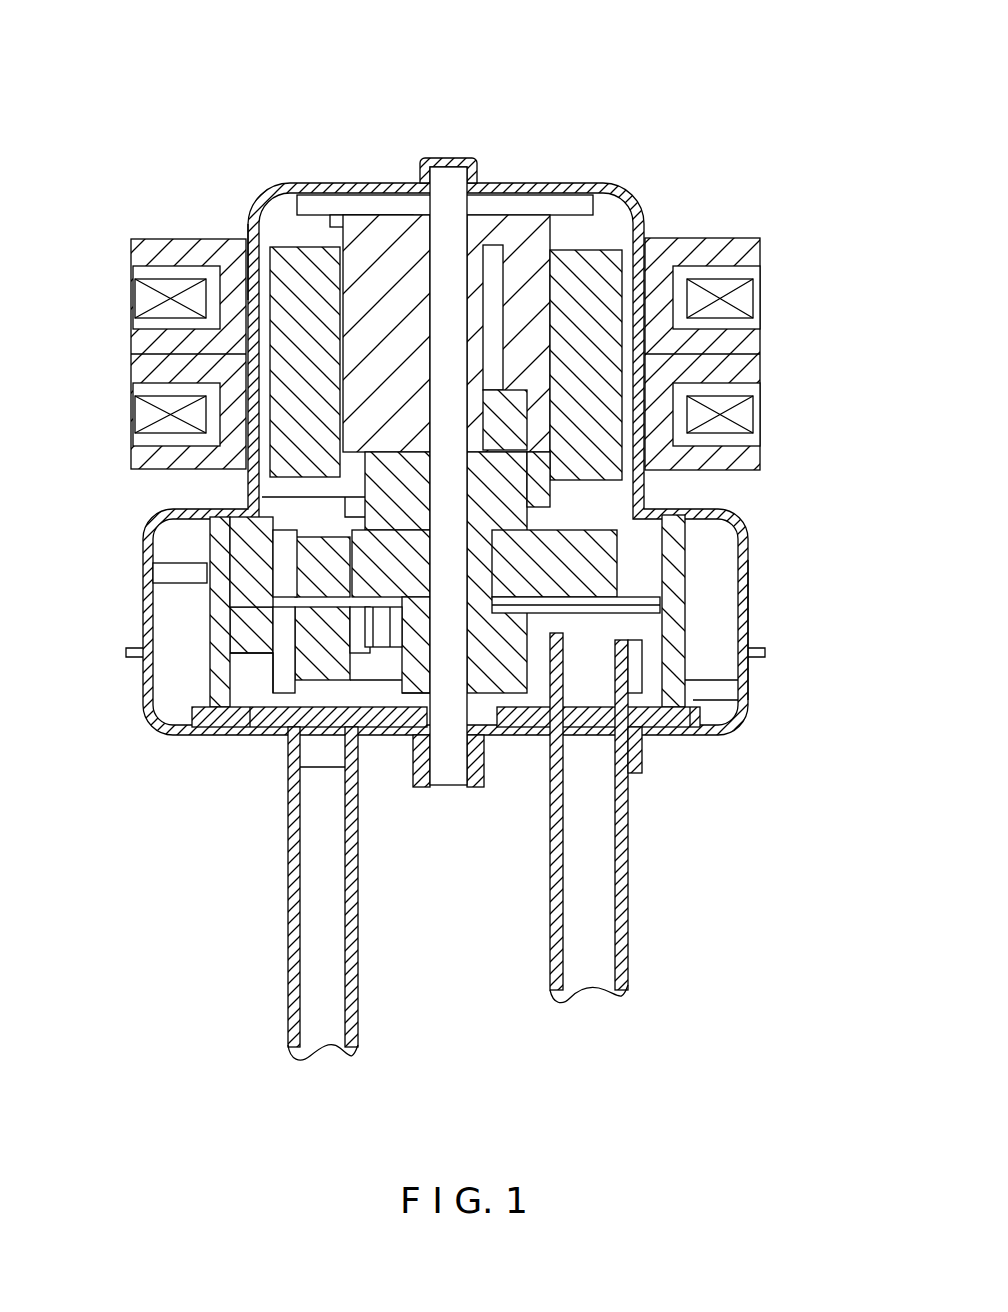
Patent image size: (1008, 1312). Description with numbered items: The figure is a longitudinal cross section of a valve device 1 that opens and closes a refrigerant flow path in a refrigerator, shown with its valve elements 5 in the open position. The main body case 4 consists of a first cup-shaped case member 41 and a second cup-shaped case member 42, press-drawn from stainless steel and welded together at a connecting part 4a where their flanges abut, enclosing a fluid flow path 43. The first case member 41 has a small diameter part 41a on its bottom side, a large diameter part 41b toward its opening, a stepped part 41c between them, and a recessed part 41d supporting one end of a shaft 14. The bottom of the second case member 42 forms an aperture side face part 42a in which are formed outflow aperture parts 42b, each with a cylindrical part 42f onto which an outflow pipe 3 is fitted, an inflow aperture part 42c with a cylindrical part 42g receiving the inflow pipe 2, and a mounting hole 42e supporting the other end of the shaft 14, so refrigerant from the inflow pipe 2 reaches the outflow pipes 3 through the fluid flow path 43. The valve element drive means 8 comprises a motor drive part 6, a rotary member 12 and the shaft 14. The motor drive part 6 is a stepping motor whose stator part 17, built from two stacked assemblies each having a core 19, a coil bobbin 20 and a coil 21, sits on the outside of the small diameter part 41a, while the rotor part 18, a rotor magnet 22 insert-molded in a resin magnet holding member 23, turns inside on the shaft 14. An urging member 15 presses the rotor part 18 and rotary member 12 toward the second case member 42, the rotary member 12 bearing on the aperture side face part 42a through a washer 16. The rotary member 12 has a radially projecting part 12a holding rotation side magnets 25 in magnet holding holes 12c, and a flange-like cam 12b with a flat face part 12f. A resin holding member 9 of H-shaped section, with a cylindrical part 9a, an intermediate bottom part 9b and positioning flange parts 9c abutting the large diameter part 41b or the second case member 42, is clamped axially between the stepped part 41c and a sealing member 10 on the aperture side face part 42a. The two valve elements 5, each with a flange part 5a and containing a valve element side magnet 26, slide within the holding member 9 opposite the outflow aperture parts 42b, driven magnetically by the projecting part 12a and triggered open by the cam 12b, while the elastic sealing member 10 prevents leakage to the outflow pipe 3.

The valve device 1 is at (158, 74).
The inflow pipe 2 is at (705, 840).
The outflow pipe 3 is at (287, 1032).
The main body case 4 is at (473, 630).
The connecting part 4a is at (118, 652).
The valve element 5 is at (252, 655).
The flange part 5a is at (202, 682).
The motor drive part 6 is at (560, 279).
The valve element drive means 8 is at (462, 386).
The holding member 9 is at (690, 555).
The cylindrical part 9a is at (262, 600).
The intermediate bottom part 9b is at (260, 628).
The positioning flange part 9c is at (218, 588).
The sealing member 10 is at (651, 764).
The rotary member 12 is at (510, 390).
The projecting part 12a is at (590, 548).
The cam 12b is at (400, 745).
The magnet holding hole 12c is at (310, 568).
The flat face part 12f is at (368, 745).
The shaft 14 is at (525, 212).
The urging member 15 is at (296, 228).
The washer 16 is at (433, 780).
The stator part 17 is at (712, 226).
The rotor part 18 is at (610, 220).
The core 19 is at (500, 333).
The coil bobbin 20 is at (501, 340).
The coil 21 is at (745, 297).
The rotor magnet 22 is at (256, 236).
The magnet holding member 23 is at (300, 232).
The rotation side magnet 25 is at (290, 560).
The valve element side magnet 26 is at (293, 735).
The first case member 41 is at (746, 615).
The small diameter part 41a is at (249, 238).
The large diameter part 41b is at (746, 577).
The stepped part 41c is at (262, 548).
The recessed part 41d is at (420, 165).
The second case member 42 is at (724, 689).
The aperture side face part 42a is at (703, 733).
The outflow aperture part 42b is at (282, 740).
The inflow aperture part 42c is at (627, 785).
The mounting hole 42e is at (457, 768).
The cylindrical part 42f is at (293, 740).
The cylindrical part 42g is at (636, 773).
The fluid flow path 43 is at (280, 498).